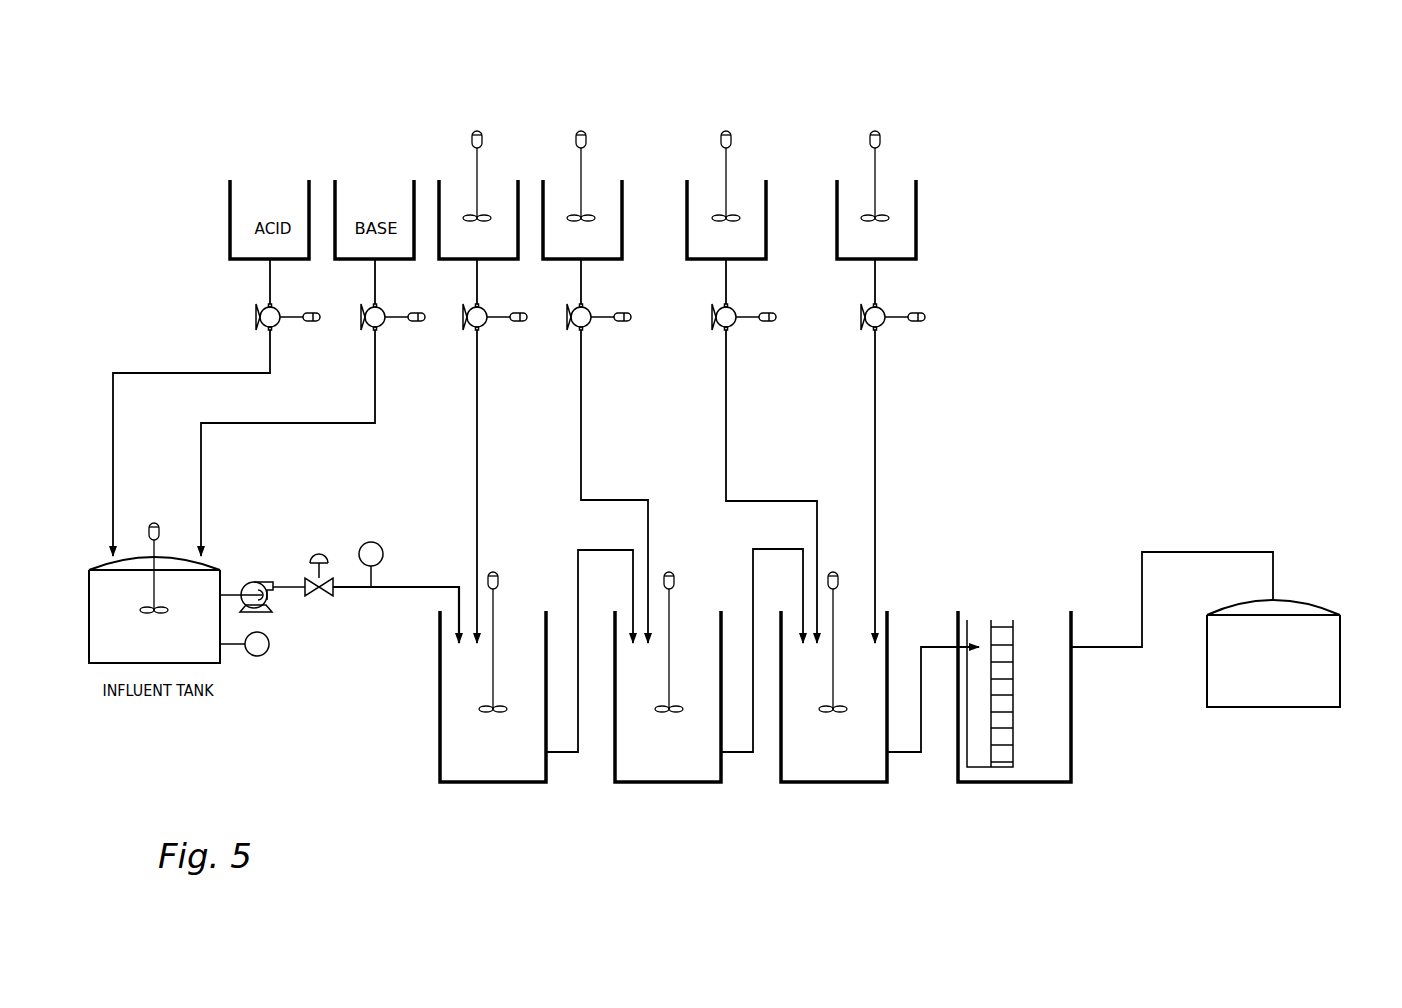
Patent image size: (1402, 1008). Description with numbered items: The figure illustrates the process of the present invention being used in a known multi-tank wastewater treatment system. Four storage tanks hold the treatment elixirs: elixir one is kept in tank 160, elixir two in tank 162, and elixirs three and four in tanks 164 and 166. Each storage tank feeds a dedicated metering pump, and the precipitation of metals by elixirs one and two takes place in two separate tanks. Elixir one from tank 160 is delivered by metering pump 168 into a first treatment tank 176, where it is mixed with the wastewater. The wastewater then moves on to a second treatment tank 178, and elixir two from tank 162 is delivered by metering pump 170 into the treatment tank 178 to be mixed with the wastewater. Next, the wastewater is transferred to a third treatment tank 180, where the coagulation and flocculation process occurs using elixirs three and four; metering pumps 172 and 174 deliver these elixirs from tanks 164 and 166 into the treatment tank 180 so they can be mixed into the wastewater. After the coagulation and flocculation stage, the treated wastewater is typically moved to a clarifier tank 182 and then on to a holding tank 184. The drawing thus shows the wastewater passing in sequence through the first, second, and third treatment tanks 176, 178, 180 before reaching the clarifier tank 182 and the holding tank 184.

The tank 160 is at (493, 248).
The tank 162 is at (596, 248).
The tank 164 is at (741, 248).
The tank 166 is at (890, 248).
The metering pump 168 is at (482, 326).
The metering pump 170 is at (586, 326).
The metering pump 172 is at (731, 326).
The metering pump 174 is at (880, 326).
The first treatment tank 176 is at (508, 749).
The second treatment tank 178 is at (684, 749).
The third treatment tank 180 is at (848, 749).
The clarifier tank 182 is at (1071, 738).
The holding tank 184 is at (1340, 630).